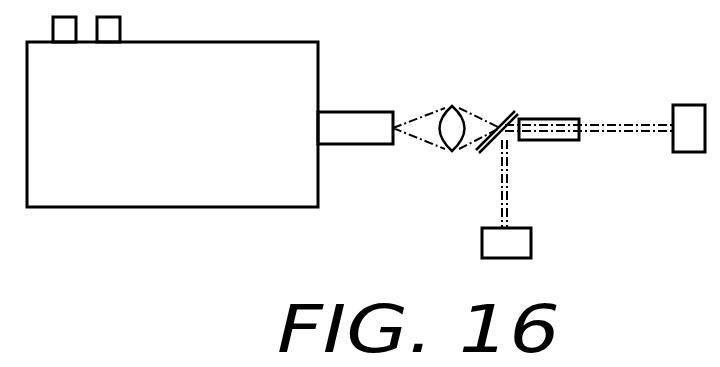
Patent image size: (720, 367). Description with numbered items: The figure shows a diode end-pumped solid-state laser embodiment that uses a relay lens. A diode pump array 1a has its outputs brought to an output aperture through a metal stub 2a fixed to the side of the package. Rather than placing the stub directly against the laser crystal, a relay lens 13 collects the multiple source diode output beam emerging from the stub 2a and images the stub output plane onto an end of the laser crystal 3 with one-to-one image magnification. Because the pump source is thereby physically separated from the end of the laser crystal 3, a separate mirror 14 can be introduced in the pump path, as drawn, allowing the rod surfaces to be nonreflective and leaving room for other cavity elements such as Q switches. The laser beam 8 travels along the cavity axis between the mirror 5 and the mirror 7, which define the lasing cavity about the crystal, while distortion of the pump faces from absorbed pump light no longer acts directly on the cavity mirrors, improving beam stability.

The diode pump array 1a is at (157, 207).
The metal stub 2a is at (370, 111).
The relay lens 13 is at (452, 106).
The mirror 14 is at (504, 112).
The laser crystal 3 is at (572, 141).
The laser beam 8 is at (634, 120).
The back mirror 5 is at (692, 105).
The front mirror 7 is at (482, 240).